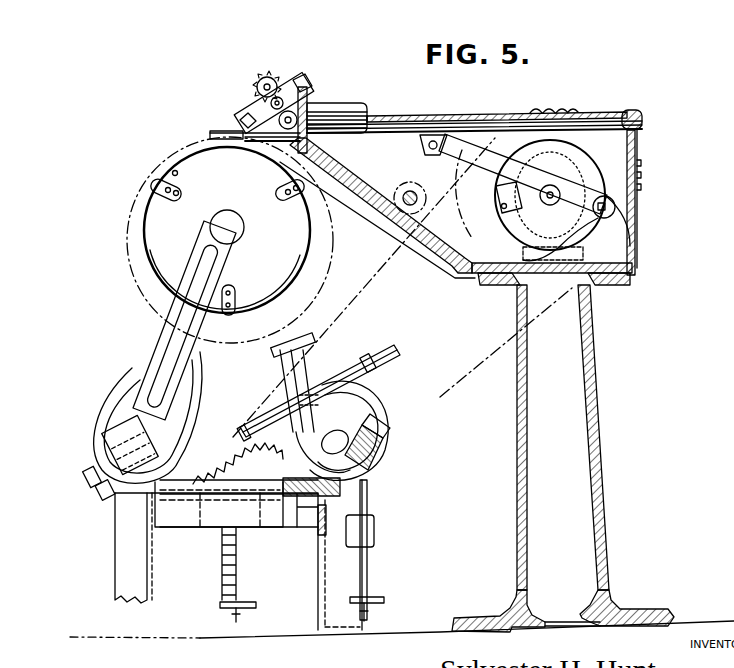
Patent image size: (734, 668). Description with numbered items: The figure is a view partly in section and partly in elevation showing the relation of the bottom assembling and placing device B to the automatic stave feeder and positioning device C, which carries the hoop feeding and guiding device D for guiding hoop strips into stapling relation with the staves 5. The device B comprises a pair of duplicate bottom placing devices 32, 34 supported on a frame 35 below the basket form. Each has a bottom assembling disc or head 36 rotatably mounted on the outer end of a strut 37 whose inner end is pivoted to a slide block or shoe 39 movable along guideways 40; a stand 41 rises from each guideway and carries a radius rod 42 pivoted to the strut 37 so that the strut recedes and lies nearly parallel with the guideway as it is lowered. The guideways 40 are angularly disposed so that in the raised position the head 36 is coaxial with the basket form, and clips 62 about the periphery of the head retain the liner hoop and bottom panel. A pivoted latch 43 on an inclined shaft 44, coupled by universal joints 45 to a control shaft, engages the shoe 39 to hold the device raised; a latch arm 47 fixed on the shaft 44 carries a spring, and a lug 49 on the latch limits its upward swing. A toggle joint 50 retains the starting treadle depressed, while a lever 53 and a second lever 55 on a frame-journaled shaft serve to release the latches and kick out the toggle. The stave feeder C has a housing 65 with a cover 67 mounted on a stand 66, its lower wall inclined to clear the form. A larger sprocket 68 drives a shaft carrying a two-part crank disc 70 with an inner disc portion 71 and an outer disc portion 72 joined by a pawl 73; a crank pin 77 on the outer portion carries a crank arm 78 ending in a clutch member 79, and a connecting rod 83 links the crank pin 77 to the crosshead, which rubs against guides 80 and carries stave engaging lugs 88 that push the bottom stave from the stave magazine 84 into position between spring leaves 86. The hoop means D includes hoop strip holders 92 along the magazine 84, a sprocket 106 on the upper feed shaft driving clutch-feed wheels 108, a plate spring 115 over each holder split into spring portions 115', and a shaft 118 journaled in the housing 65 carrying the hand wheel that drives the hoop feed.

The staves 5 is at (329, 108).
The bottom placing device 32 is at (163, 314).
The bottom placing device 34 is at (390, 422).
The frame 35 is at (132, 570).
The bottom assembling disc or head 36 is at (160, 224).
The strut 37 is at (176, 334).
The slide block or shoe 39 is at (108, 454).
The guideways 40 is at (98, 486).
The stand 41 is at (125, 396).
The radius rod 42 is at (308, 366).
The pivoted latch 43 is at (368, 468).
The inclined shaft 44 is at (92, 474).
The universal joints 45 is at (318, 480).
The latch arm 47 is at (328, 534).
The lug 49 is at (362, 490).
The toggle joint 50 is at (372, 530).
The lever 53 is at (258, 538).
The second lever 55 is at (345, 528).
The pins or clips 62 is at (151, 188).
The housing 65 is at (640, 158).
The stand 66 is at (599, 432).
The cover 67 is at (472, 124).
The larger sprocket 68 is at (640, 190).
The two-part crank disc 70 is at (640, 146).
The inner disc portion 71 is at (522, 208).
The outer disc portion 72 is at (520, 234).
The pawl 73 is at (502, 203).
The crank pin 77 is at (612, 212).
The crank arm 78 is at (618, 249).
The clutch member 79 is at (560, 186).
The guides 80 is at (572, 124).
The connecting rod 83 is at (490, 162).
The stave magazine or hopper 84 is at (366, 102).
The spring leaves 86 is at (265, 148).
The stave engaging lugs 88 is at (408, 126).
The hoop strip holders and guides 92 is at (243, 122).
The sprocket 106 is at (270, 74).
The clutch-feed wheel 108 is at (268, 92).
The plate spring 115 is at (243, 93).
The spring portions 115' is at (318, 61).
The shaft 118 is at (410, 200).
The bottom assembling and placing device B is at (122, 542).
The automatic stave feeder and positioning device C is at (595, 111).
The hoop feeding and guiding device D is at (282, 86).